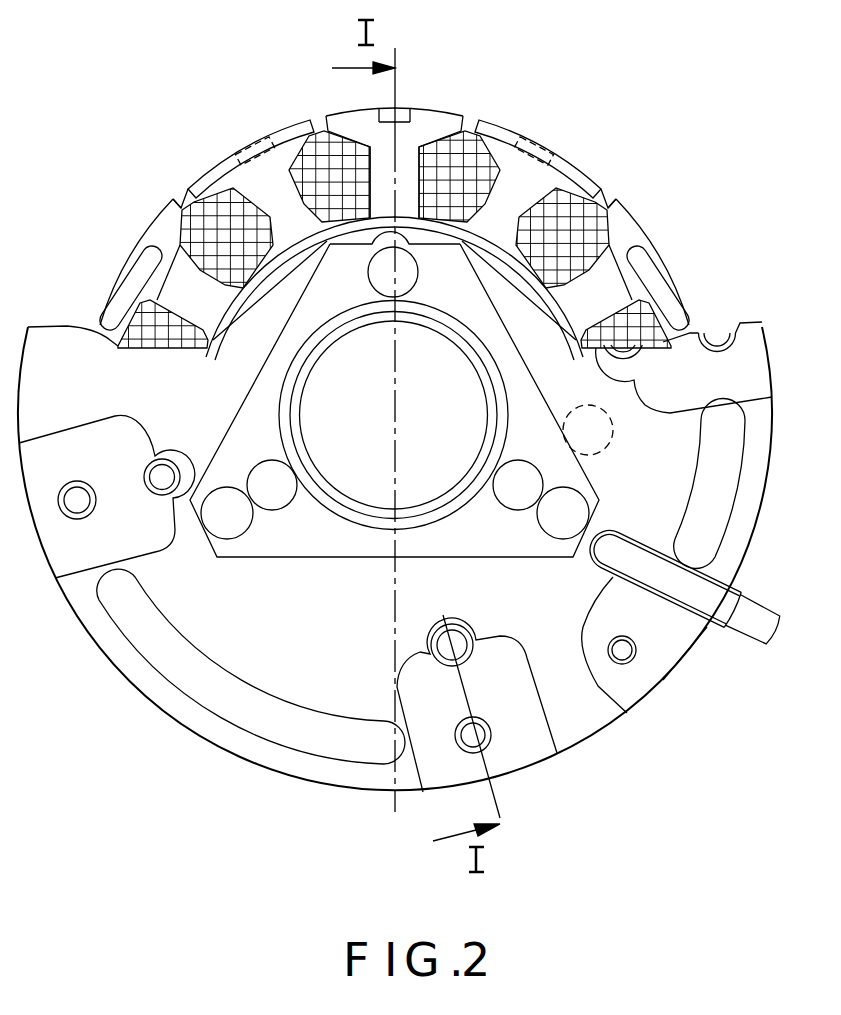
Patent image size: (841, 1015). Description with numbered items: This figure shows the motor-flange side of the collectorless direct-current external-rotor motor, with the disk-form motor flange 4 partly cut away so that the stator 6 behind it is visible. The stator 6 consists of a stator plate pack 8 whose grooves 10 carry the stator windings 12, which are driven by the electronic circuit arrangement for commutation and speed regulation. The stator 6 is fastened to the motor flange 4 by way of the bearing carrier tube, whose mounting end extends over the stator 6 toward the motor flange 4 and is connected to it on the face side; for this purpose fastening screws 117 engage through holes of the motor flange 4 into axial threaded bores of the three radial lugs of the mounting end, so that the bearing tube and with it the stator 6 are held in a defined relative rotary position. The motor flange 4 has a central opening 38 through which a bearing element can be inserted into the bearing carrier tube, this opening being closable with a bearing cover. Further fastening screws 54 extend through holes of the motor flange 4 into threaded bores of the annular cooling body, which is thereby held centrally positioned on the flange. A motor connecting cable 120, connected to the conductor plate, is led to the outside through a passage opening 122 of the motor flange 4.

The motor flange 4 is at (84, 592).
The stator 6 is at (526, 126).
The stator plate pack 8 is at (535, 199).
The grooves 10 is at (187, 200).
The stator windings 12 is at (233, 188).
The central opening 38 is at (383, 385).
The fastening screws 54 is at (384, 277).
The fastening screw 117 is at (270, 506).
The motor connecting cable 120 is at (736, 637).
The passage opening 122 is at (592, 567).